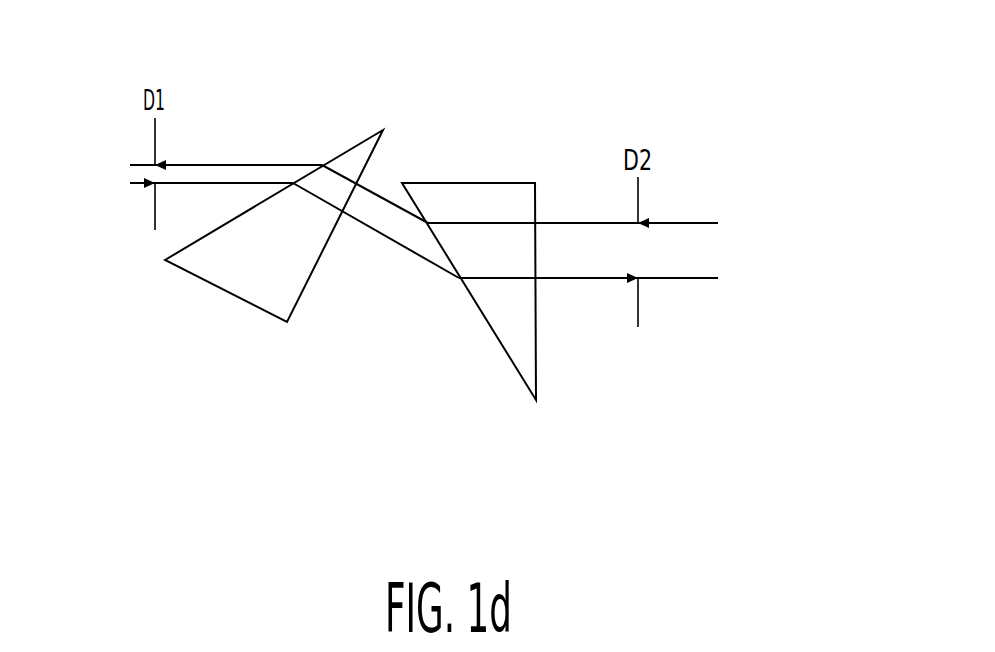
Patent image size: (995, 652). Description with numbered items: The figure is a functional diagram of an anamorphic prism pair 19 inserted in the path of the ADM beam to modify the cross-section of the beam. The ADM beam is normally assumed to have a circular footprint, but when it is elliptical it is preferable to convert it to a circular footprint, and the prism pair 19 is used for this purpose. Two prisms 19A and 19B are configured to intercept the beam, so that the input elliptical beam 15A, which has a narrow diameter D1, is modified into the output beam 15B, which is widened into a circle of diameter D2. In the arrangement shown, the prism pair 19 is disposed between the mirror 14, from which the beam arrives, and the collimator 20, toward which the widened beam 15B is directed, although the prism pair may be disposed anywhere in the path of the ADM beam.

The mirror 14 is at (80, 217).
The input elliptical beam 15A is at (220, 165).
The output circular beam 15B is at (717, 250).
The anamorphic prism pair 19 is at (445, 58).
The first prism 19A is at (240, 300).
The second prism 19B is at (537, 355).
The collimator 20 is at (825, 298).